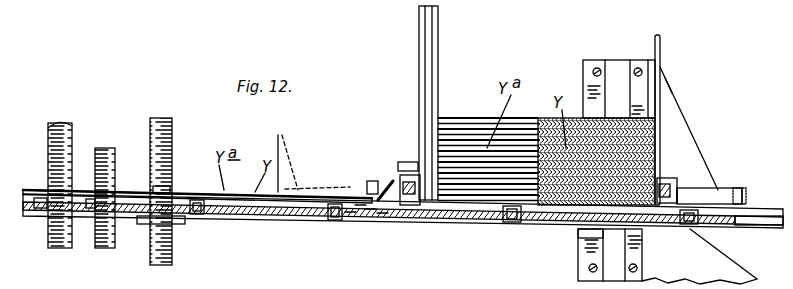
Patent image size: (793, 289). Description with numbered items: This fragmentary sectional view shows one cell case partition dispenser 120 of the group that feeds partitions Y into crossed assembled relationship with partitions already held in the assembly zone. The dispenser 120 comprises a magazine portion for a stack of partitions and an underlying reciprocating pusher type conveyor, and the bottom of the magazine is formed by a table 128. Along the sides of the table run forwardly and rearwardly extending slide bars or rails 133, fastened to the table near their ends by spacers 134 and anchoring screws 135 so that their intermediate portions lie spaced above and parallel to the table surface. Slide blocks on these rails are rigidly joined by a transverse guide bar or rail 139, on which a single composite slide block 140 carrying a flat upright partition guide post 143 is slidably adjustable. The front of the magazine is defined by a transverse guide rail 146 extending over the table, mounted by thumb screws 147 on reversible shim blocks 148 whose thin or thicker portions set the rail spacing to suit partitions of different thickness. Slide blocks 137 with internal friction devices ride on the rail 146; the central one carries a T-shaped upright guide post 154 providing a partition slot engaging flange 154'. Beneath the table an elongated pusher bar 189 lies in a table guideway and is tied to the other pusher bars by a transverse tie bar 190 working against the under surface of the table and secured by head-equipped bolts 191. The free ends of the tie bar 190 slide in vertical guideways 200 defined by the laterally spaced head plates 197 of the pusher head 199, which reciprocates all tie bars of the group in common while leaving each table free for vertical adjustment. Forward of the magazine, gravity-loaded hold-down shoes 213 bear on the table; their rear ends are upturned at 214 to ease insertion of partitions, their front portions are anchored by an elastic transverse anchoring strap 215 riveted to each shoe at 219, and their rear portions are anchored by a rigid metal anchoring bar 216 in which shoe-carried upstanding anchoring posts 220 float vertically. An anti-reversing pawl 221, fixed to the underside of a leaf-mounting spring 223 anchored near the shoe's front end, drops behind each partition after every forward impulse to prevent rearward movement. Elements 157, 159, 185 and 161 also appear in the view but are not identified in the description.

The cell case partition dispenser 120 is at (414, 124).
The table 128 is at (370, 210).
The slide bars or rails 133 is at (712, 190).
The spacers 134 is at (742, 205).
The anchoring screws 135 is at (745, 190).
The slide blocks 137 is at (398, 177).
The transverse guide bar or rail 139 is at (673, 178).
The slide block 140 is at (677, 183).
The flat upright partition guide post 143 is at (661, 44).
The transverse guide rail 146 is at (408, 197).
The thumb screws 147 is at (403, 170).
The shim blocks 148 is at (404, 200).
The T-shaped upright guide post 154 is at (453, 103).
The partition slot engaging flange 154' is at (462, 103).
The coil 157 is at (68, 128).
The coil 159 is at (163, 118).
The clamp 161 is at (178, 224).
The coil 185 is at (108, 148).
The pusher bar 189 is at (745, 216).
The transverse tie bar 190 is at (578, 229).
The head-equipped bolts 191 is at (585, 238).
The head plates 197 is at (672, 122).
The pusher head 199 is at (672, 106).
The vertical guideways 200 is at (616, 70).
The hold-down shoes 213 is at (33, 190).
The upturned rear ends of hold-down shoes 214 is at (382, 214).
The transverse anchoring strap 215 is at (198, 196).
The transverse anchoring bar 216 is at (367, 183).
The rivet 219 is at (170, 188).
The upstanding anchoring post 220 is at (360, 206).
The partition-engaging pawl 221 is at (350, 212).
The leaf-mounting spring 223 is at (310, 158).